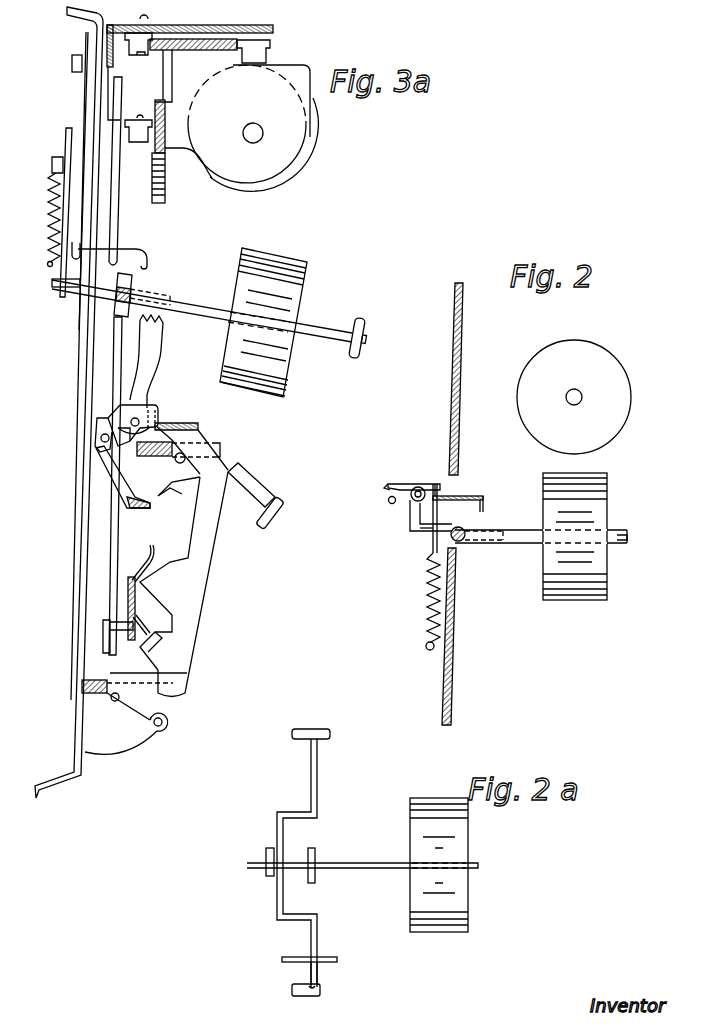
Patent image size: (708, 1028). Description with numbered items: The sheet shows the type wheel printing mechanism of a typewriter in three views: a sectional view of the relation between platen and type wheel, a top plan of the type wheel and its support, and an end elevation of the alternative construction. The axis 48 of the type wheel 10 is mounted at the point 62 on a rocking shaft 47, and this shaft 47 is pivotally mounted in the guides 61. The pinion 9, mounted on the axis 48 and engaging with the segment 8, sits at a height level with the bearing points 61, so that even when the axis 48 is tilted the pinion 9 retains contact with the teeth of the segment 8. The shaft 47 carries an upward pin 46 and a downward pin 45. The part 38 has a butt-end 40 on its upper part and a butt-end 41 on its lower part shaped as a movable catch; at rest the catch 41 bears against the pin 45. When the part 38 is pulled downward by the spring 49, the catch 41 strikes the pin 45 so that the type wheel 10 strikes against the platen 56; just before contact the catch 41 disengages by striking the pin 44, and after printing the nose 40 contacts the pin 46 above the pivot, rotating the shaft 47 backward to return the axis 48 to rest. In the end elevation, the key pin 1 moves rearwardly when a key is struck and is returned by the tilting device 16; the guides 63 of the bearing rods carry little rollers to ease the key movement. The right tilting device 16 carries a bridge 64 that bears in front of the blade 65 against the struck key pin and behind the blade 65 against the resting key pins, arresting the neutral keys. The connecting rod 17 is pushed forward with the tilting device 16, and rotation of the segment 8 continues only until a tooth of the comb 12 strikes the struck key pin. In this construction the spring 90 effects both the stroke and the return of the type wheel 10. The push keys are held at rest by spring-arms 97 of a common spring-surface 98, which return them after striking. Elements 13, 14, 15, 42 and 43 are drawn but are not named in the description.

In FIG. 3A, the key pin 1 is at (228, 471).
In FIG. 3A, the segment 8 is at (120, 363).
In FIG. 3A, the pinion 9 is at (122, 317).
In FIG. 2A, the pinion 9 is at (314, 877).
In FIG. 3A, the type wheel 10 is at (307, 263).
In FIG. 2, the type wheel 10 is at (593, 573).
In FIG. 2A, the type wheel 10 is at (445, 932).
In FIG. 3A, the comb 12 is at (133, 584).
In FIG. 3A, the spring wire 13 is at (148, 552).
In FIG. 3A, the arm 14 is at (162, 579).
In FIG. 3A, the tooth 15 is at (156, 643).
In FIG. 3A, the tilting device 16 is at (199, 426).
In FIG. 3A, the connecting rod 17 is at (157, 361).
In FIG. 2, the part with butt-ends 38 is at (432, 541).
In FIG. 3A, the butt-end 40 is at (147, 262).
In FIG. 2, the butt-end 40 is at (484, 503).
In FIG. 3A, the catch 41 is at (60, 297).
In FIG. 2, the catch 41 is at (412, 515).
In FIG. 2, the pivot 42 is at (388, 488).
In FIG. 2, the pawl 43 is at (412, 482).
In FIG. 2, the pin 44 is at (389, 503).
In FIG. 3A, the downward pin 45 is at (78, 293).
In FIG. 2, the downward pin 45 is at (420, 537).
In FIG. 2A, the downward pin 45 is at (303, 968).
In FIG. 3A, the upward pin 46 is at (173, 303).
In FIG. 2, the upward pin 46 is at (492, 541).
In FIG. 2A, the upward pin 46 is at (326, 962).
In FIG. 3A, the rocking shaft 47 is at (133, 290).
In FIG. 2, the rocking shaft 47 is at (460, 541).
In FIG. 2A, the rocking shaft 47 is at (316, 778).
In FIG. 3A, the axis of the type wheel 48 is at (318, 335).
In FIG. 2, the axis of the type wheel 48 is at (522, 533).
In FIG. 2A, the axis of the type wheel 48 is at (372, 870).
In FIG. 2, the spring 49 is at (430, 609).
In FIG. 3A, the platen 56 is at (318, 150).
In FIG. 2, the platen 56 is at (602, 352).
In FIG. 2A, the guides 61 is at (314, 996).
In FIG. 2A, the mounting point 62 is at (268, 858).
In FIG. 3A, the guides of the bearing rods 63 is at (222, 450).
In FIG. 3A, the bridge 64 is at (140, 504).
In FIG. 3A, the blade 65 is at (163, 494).
In FIG. 3A, the spring 90 is at (48, 245).
In FIG. 3A, the spring-arms 97 is at (128, 748).
In FIG. 3A, the spring-surface 98 is at (83, 777).